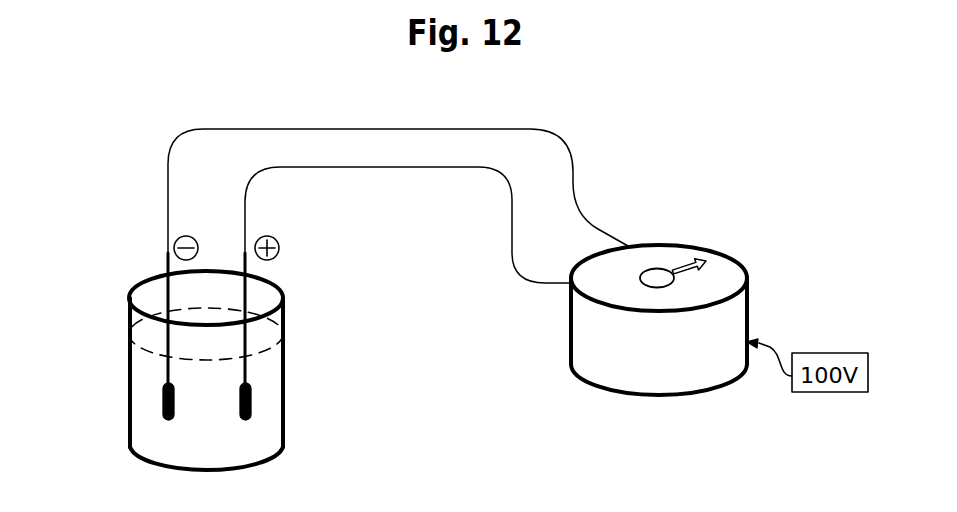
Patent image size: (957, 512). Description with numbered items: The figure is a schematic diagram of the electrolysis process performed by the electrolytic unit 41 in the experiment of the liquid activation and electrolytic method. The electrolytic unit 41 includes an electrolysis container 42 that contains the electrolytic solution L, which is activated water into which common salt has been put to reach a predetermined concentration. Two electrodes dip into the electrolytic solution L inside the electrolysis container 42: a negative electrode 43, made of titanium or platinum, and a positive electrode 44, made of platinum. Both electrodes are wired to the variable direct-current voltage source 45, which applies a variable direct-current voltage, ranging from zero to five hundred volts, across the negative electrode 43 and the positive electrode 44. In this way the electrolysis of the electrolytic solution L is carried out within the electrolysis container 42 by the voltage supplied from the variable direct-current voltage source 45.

The electrolytic unit 41 is at (101, 206).
The electrolysis container 42 is at (130, 351).
The negative electrode 43 is at (162, 405).
The positive electrode 44 is at (251, 401).
The variable direct-current voltage source 45 is at (571, 347).
The electrolytic solution L is at (283, 335).